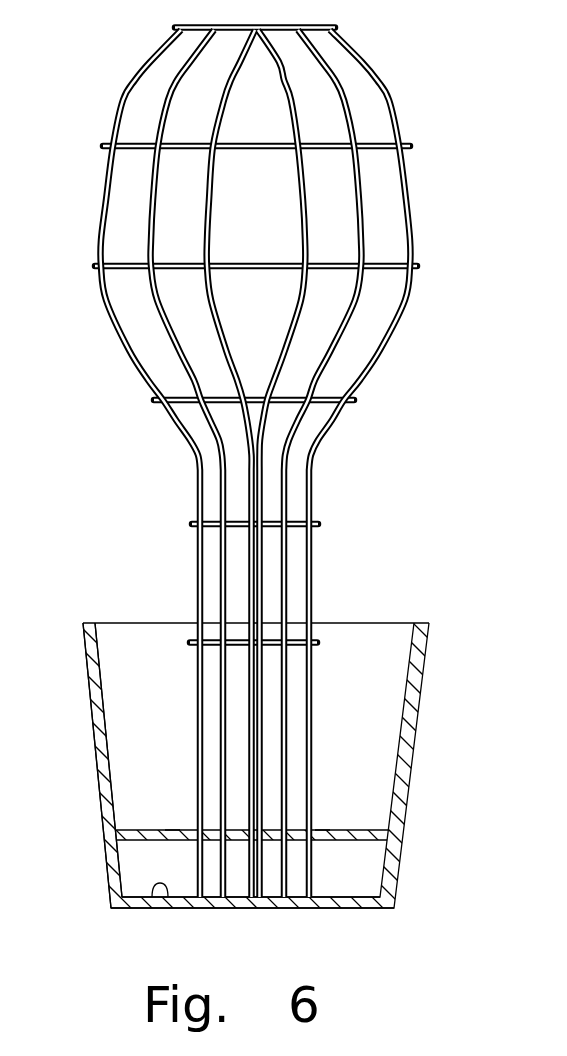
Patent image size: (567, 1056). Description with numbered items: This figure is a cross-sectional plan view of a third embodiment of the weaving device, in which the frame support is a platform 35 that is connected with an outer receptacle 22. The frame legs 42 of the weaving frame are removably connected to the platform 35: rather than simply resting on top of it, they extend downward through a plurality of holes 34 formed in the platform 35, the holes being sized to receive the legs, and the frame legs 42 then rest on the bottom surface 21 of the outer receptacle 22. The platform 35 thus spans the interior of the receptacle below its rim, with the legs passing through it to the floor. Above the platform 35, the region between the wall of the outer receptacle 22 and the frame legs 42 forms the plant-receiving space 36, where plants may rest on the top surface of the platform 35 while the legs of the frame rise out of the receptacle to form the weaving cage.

The frame legs 42 is at (413, 203).
The plant-receiving space 36 is at (283, 787).
The outer receptacle 22 is at (107, 858).
The bottom surface 21 is at (152, 894).
The platform 35 is at (370, 832).
The holes 34 is at (172, 830).